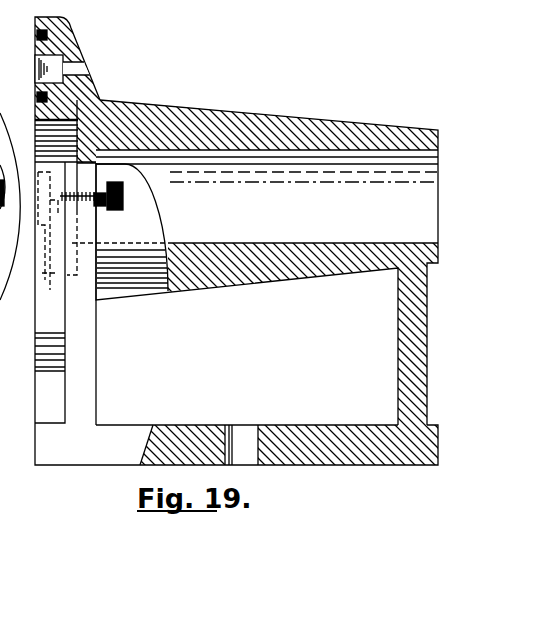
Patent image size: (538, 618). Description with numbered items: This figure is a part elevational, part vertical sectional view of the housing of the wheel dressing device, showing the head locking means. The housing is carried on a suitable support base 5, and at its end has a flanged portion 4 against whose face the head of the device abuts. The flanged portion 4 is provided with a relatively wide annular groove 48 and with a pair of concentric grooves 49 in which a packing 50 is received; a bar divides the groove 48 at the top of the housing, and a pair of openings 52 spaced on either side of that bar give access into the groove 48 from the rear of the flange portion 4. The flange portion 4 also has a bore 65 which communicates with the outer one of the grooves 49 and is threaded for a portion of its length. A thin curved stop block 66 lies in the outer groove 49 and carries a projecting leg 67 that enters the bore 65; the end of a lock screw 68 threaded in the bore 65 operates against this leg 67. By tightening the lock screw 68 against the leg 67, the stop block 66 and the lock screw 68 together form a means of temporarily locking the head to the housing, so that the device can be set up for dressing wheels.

The flanged portion 4 is at (315, 122).
The support base 5 is at (362, 467).
The annular groove 48 is at (36, 78).
The concentric grooves 49 is at (36, 92).
The packing 50 is at (36, 33).
The openings 52 is at (85, 72).
The bore 65 is at (118, 180).
The stop block 66 is at (33, 198).
The projecting leg 67 is at (55, 188).
The lock screw 68 is at (122, 183).